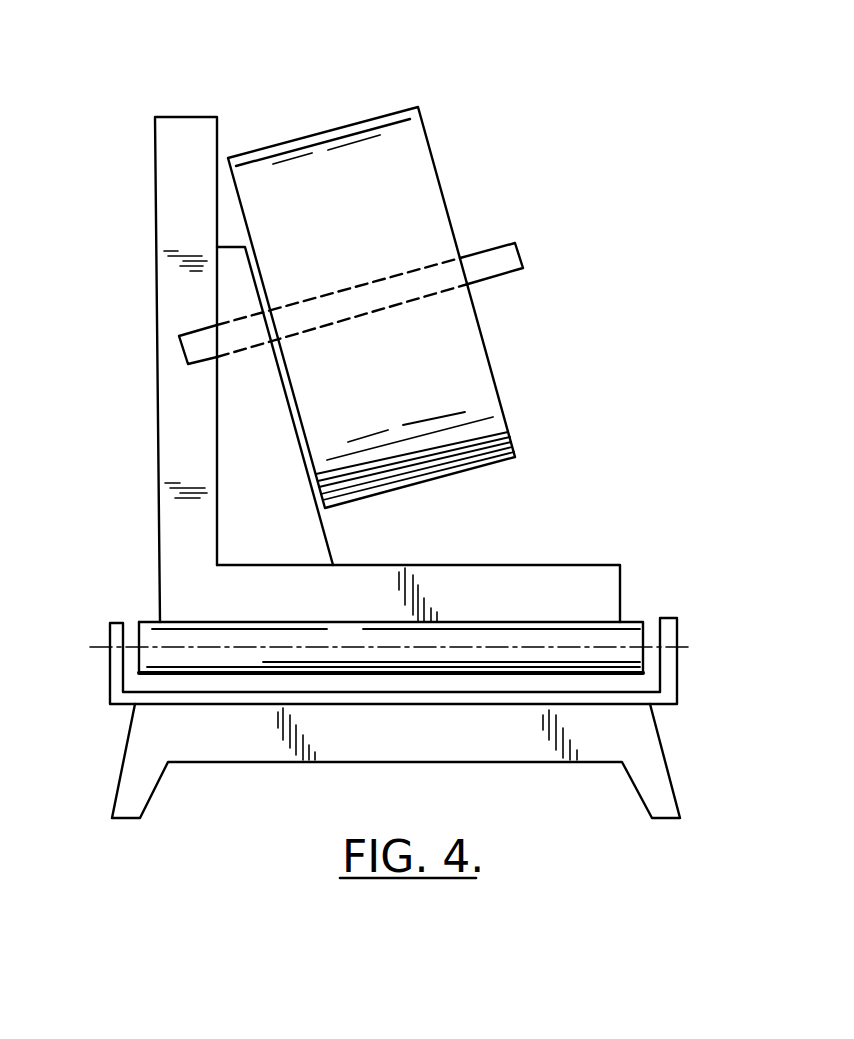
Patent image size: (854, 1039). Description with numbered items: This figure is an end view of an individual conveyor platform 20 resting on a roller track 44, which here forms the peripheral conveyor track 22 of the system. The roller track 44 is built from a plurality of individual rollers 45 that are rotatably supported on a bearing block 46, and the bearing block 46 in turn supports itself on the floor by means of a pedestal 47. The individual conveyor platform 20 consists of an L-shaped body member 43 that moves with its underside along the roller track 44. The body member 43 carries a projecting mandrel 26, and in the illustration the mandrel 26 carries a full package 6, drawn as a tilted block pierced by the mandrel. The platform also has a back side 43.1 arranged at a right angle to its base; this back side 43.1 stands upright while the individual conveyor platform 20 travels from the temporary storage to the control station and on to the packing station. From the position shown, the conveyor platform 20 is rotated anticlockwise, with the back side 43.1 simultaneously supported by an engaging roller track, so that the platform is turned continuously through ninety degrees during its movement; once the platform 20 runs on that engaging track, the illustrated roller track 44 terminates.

The full package 6 is at (415, 152).
The individual conveyor platform 20 is at (566, 360).
The peripheral conveyor track 22 is at (99, 475).
The projecting mandrel 26 is at (502, 253).
The L-shaped body member 43 is at (545, 570).
The back side 43.1 is at (198, 125).
The roller track 44 is at (681, 567).
The individual rollers 45 is at (187, 630).
The bearing block 46 is at (668, 676).
The pedestal 47 is at (652, 748).